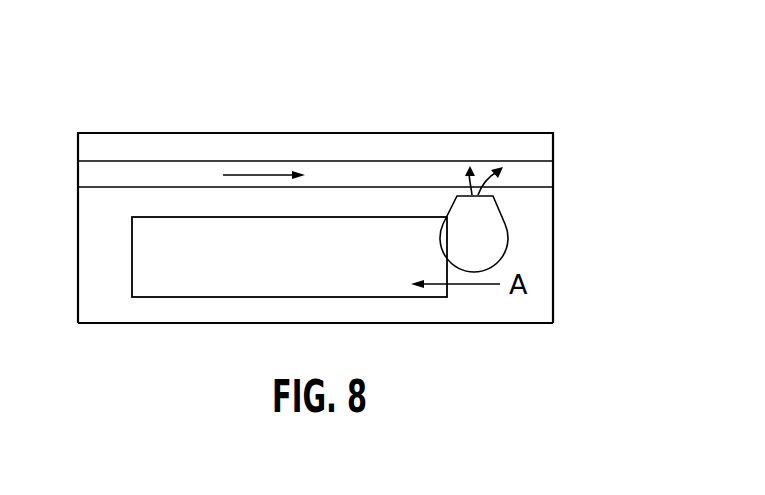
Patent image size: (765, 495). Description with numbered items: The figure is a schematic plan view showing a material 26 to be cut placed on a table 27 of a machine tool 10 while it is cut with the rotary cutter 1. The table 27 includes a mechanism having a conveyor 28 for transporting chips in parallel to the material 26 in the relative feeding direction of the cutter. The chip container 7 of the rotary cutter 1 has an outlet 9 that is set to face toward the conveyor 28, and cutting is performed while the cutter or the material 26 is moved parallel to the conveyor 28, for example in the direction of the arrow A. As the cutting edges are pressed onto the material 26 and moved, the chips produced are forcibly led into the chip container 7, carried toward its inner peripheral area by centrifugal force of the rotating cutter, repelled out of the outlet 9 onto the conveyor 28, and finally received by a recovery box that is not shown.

The rotary cutter 1 is at (509, 252).
The chip container 7 is at (508, 223).
The outlet 9 is at (482, 193).
The machine tool 10 is at (554, 228).
The material to be cut 26 is at (252, 298).
The table 27 is at (112, 302).
The conveyor 28 is at (363, 173).